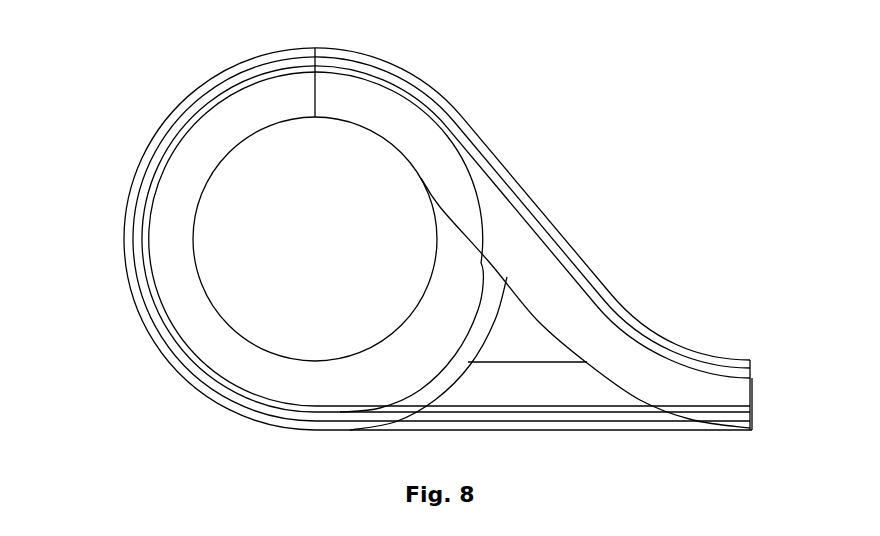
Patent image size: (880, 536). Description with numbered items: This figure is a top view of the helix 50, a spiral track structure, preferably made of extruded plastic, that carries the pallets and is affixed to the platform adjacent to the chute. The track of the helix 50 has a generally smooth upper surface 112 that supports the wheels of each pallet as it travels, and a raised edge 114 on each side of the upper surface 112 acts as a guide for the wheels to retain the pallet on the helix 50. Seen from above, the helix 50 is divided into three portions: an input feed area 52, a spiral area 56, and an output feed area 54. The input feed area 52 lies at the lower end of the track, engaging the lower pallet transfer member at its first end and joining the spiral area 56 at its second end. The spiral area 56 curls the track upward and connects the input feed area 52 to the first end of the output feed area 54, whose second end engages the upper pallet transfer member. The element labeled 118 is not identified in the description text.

The helix 50 is at (172, 75).
The spiral area 56 is at (460, 110).
The intermediate wall layer 118 is at (535, 198).
The input feed area 52 is at (697, 347).
The output feed area 54 is at (722, 393).
The upper surface 112 is at (557, 298).
The raised edge 114 is at (508, 362).